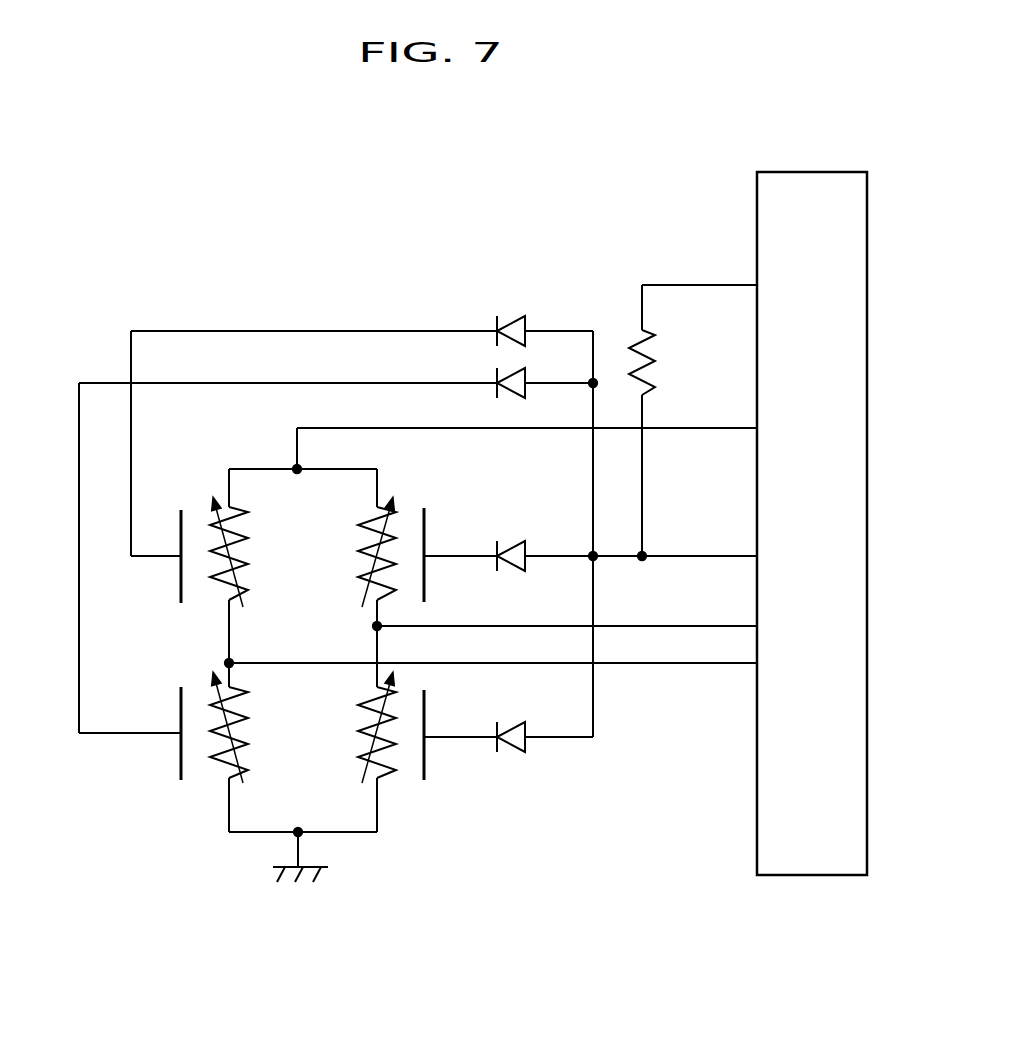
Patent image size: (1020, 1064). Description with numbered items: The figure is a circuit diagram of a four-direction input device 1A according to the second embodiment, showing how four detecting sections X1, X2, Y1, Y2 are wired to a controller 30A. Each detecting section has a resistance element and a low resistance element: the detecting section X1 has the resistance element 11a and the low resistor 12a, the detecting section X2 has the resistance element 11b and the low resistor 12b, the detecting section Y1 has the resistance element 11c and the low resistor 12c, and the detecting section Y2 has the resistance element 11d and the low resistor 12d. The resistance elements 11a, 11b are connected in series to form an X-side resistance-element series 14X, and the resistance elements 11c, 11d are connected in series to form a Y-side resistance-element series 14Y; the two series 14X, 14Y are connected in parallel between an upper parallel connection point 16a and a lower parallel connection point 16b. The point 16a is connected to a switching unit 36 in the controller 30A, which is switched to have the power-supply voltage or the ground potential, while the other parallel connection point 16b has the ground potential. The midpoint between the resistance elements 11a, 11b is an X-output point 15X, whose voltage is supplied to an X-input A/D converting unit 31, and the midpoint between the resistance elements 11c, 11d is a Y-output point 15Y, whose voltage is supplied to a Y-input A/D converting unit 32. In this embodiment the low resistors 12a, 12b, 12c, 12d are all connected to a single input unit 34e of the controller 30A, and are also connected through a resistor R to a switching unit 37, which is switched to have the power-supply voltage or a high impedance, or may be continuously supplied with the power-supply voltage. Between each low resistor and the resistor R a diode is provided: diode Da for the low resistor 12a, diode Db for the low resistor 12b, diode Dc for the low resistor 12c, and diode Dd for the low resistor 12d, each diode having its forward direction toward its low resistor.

The four-direction input device 1A is at (505, 215).
The controller 30A is at (867, 215).
The switching unit 37 is at (757, 285).
The switching unit 36 is at (757, 428).
The single input unit 34e is at (757, 556).
The X-input A/D converting unit 31 is at (757, 626).
The Y-input A/D converting unit 32 is at (757, 664).
The resistor R is at (656, 352).
The diode Dc is at (528, 320).
The diode Dd is at (528, 373).
The diode Da is at (528, 545).
The diode Db is at (528, 722).
The parallel connection point 16a is at (296, 468).
The parallel connection point 16b is at (301, 835).
The X-output point 15X is at (375, 626).
The Y-output point 15Y is at (226, 663).
The resistance element 11a is at (366, 546).
The resistance element 11b is at (366, 740).
The resistance element 11c is at (240, 540).
The resistance element 11d is at (240, 736).
The low resistor 12a is at (424, 522).
The low resistor 12b is at (424, 765).
The low resistor 12c is at (181, 596).
The low resistor 12d is at (181, 765).
The X-side resistance-element series 14X is at (414, 666).
The Y-side resistance-element series 14Y is at (207, 686).
The detecting section X1 is at (404, 470).
The detecting section X2 is at (402, 813).
The detecting section Y1 is at (202, 477).
The detecting section Y2 is at (203, 812).